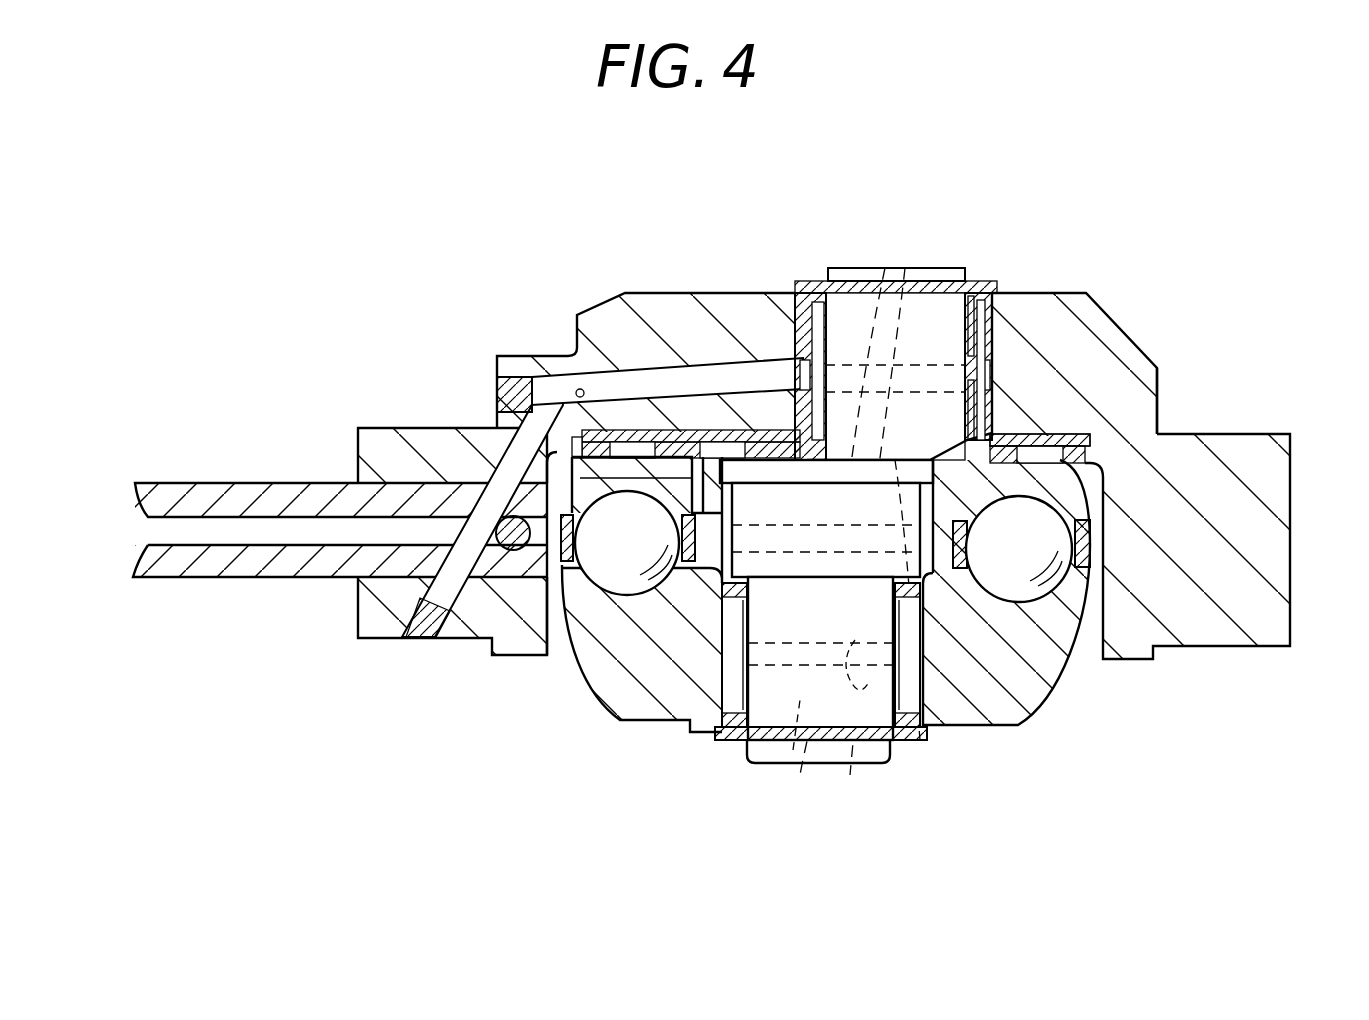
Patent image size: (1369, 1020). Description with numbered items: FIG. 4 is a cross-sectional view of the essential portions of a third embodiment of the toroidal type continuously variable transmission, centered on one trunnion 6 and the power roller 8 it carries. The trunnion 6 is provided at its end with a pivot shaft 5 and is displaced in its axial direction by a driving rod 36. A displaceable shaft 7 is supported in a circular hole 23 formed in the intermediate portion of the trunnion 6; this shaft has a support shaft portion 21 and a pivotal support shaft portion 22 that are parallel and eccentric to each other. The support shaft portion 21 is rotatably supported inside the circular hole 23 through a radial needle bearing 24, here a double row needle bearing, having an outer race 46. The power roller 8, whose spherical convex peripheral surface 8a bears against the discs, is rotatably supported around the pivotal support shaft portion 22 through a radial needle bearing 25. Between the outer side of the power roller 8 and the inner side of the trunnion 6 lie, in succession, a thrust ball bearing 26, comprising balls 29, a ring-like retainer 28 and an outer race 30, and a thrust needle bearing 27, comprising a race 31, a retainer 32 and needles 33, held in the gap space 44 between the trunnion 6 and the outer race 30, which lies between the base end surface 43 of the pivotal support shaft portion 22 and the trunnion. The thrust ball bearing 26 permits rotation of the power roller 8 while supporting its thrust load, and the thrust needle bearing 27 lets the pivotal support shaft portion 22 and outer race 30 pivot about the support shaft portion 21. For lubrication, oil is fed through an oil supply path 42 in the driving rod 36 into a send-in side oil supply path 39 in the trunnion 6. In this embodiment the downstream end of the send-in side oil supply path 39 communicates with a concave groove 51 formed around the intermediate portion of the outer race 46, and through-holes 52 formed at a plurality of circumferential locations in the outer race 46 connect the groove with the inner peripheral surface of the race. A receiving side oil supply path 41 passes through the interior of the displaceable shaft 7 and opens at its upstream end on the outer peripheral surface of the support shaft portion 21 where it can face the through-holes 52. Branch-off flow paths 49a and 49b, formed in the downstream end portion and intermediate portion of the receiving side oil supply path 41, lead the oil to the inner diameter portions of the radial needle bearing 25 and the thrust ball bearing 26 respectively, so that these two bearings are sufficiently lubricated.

The pivot shaft 5 is at (377, 430).
The driving rod 36 is at (217, 495).
The oil supply path 42 is at (292, 527).
The outer race 30 is at (580, 473).
The send-in side oil supply path 39 is at (557, 360).
The race 31 is at (637, 375).
The needles 33 is at (690, 430).
The thrust needle bearing 27 is at (735, 370).
The through-holes 52 is at (803, 372).
The circular hole 23 is at (805, 300).
The base end surface 43 is at (828, 345).
The displaceable shaft 7 is at (878, 268).
The support shaft portion 21 is at (930, 300).
The radial needle bearing 24 is at (978, 310).
The outer race 46 is at (1000, 350).
The concave groove 51 is at (992, 395).
The gap space 44 is at (1040, 447).
The retainer 32 is at (1130, 420).
The trunnion 6 is at (1160, 410).
The peripheral surface 8a is at (565, 625).
The balls 29 is at (600, 577).
The thrust ball bearing 26 is at (628, 598).
The radial needle bearing 25 is at (722, 660).
The receiving side oil supply path 41 is at (793, 750).
The pivotal support shaft portion 22 is at (825, 742).
The branch-off flow path 49a is at (865, 750).
The branch-off flow path 49b is at (895, 740).
The power roller 8 is at (1015, 700).
The retainer 28 is at (1091, 548).